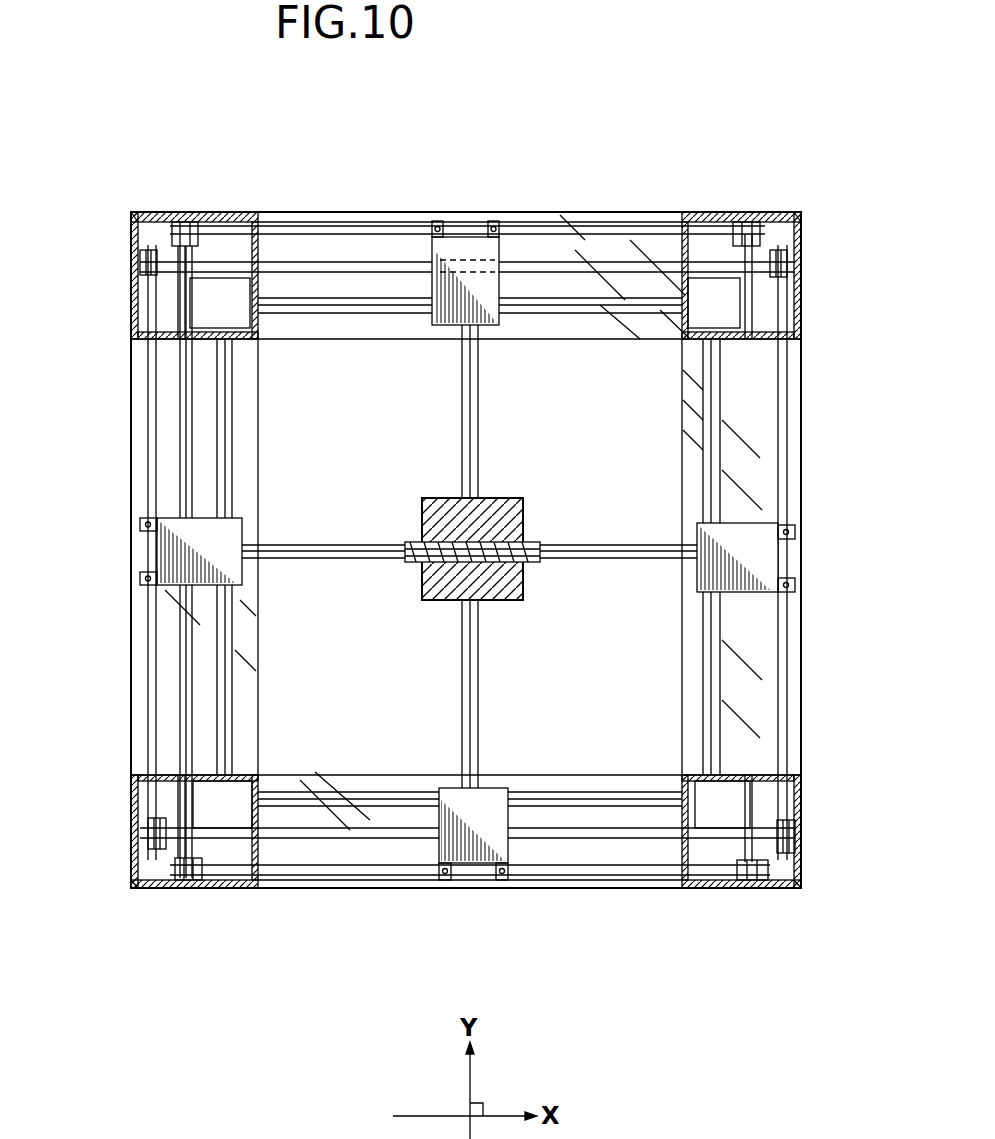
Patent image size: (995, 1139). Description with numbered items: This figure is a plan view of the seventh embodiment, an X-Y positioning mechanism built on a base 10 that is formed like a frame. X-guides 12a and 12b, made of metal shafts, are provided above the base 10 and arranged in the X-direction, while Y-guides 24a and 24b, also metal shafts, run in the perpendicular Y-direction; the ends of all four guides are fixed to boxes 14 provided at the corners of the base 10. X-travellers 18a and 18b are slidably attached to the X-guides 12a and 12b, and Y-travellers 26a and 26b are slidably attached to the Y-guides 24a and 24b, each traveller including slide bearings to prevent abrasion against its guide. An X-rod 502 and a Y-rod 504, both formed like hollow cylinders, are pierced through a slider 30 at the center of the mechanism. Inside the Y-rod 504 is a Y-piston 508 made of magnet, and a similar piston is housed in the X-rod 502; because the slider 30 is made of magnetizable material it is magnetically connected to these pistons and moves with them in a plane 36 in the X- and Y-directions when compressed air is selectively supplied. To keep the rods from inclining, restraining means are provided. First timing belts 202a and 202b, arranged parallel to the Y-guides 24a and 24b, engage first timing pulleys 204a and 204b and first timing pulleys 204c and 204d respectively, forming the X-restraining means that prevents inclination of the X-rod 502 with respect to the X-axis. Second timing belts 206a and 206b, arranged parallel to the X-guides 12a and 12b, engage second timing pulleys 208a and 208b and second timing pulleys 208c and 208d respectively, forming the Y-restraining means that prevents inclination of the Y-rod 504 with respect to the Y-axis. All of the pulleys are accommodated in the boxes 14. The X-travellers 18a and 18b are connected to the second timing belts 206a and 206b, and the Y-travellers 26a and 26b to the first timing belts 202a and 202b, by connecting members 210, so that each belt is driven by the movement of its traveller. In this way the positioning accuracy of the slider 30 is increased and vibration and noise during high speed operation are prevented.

The base 10 is at (660, 890).
The X-guide 12a is at (340, 800).
The X-guide 12b is at (290, 300).
The box 14 is at (143, 212).
The X-traveller 18a is at (468, 818).
The X-traveller 18b is at (430, 285).
The Y-guide 24a is at (710, 706).
The Y-guide 24b is at (222, 485).
The Y-traveller 26a is at (745, 540).
The Y-traveller 26b is at (205, 585).
The slider 30 is at (510, 498).
The plane 36 is at (602, 372).
The first timing belt 202a is at (787, 735).
The first timing belt 202b is at (150, 395).
The first timing pulley 204a is at (800, 835).
The first timing pulley 204b is at (796, 262).
The first timing pulley 204c is at (150, 850).
The first timing pulley 204d is at (140, 262).
The second timing belt 206a is at (600, 870).
The second timing belt 206b is at (583, 240).
The second timing pulley 208a is at (765, 882).
The second timing pulley 208b is at (228, 880).
The second timing pulley 208c is at (765, 226).
The second timing pulley 208d is at (195, 222).
The connecting member 210 is at (437, 221).
The X-rod 502 is at (638, 552).
The Y-rod 504 is at (464, 424).
The Y-piston 508 is at (424, 562).